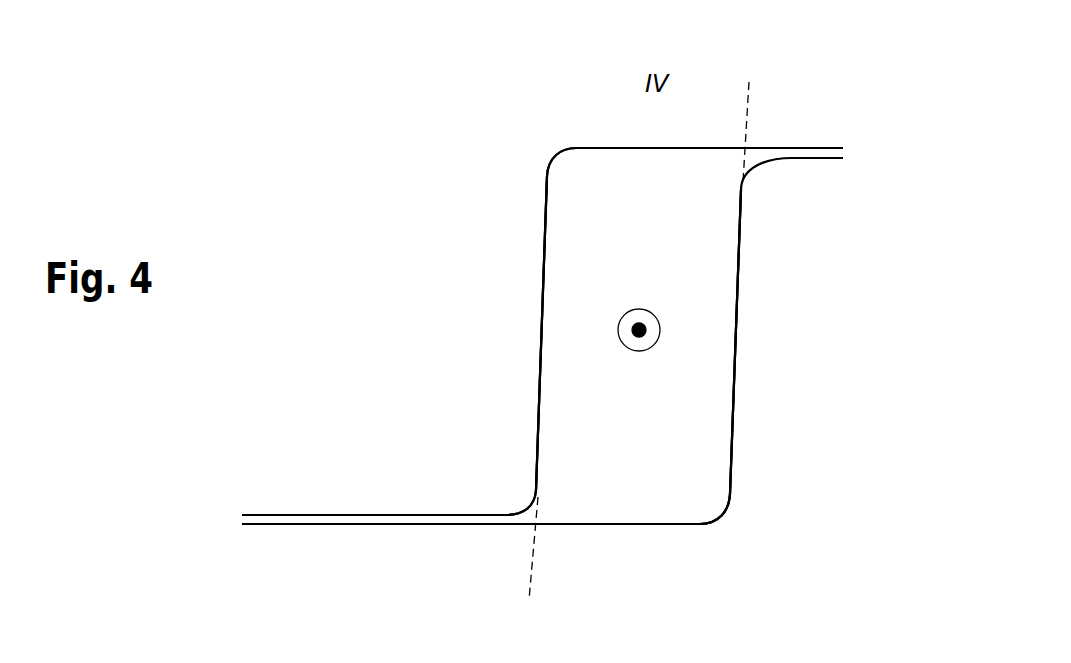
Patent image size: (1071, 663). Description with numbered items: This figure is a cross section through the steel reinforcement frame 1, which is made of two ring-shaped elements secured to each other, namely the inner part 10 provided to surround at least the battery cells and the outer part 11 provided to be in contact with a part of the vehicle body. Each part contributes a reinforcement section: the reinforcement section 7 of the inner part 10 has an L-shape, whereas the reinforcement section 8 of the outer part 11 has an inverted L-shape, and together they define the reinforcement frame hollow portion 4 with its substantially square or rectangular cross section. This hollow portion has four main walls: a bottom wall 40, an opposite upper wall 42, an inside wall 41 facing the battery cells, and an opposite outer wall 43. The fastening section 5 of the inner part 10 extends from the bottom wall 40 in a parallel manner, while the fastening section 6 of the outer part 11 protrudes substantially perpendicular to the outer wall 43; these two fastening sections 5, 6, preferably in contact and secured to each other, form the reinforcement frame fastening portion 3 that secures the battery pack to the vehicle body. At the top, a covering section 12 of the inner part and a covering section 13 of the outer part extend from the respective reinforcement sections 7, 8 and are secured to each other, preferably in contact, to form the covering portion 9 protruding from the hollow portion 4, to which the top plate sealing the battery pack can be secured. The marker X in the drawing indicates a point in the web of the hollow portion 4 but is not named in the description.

The reinforcement frame 1 is at (898, 115).
The reinforcement frame fastening portion 3 is at (318, 497).
The reinforcement frame hollow portion 4 is at (660, 553).
The fastening section 5 is at (377, 523).
The fastening section 6 is at (440, 515).
The reinforcement section 7 is at (735, 437).
The reinforcement section 8 is at (546, 218).
The covering portion 9 is at (849, 135).
The inner part 10 is at (758, 548).
The outer part 11 is at (420, 277).
The covering section 12 is at (799, 158).
The covering section 13 is at (781, 148).
The bottom wall 40 is at (622, 524).
The inside wall 41 is at (739, 312).
The upper wall 42 is at (609, 148).
The outer wall 43 is at (540, 330).
The axis X is at (645, 330).